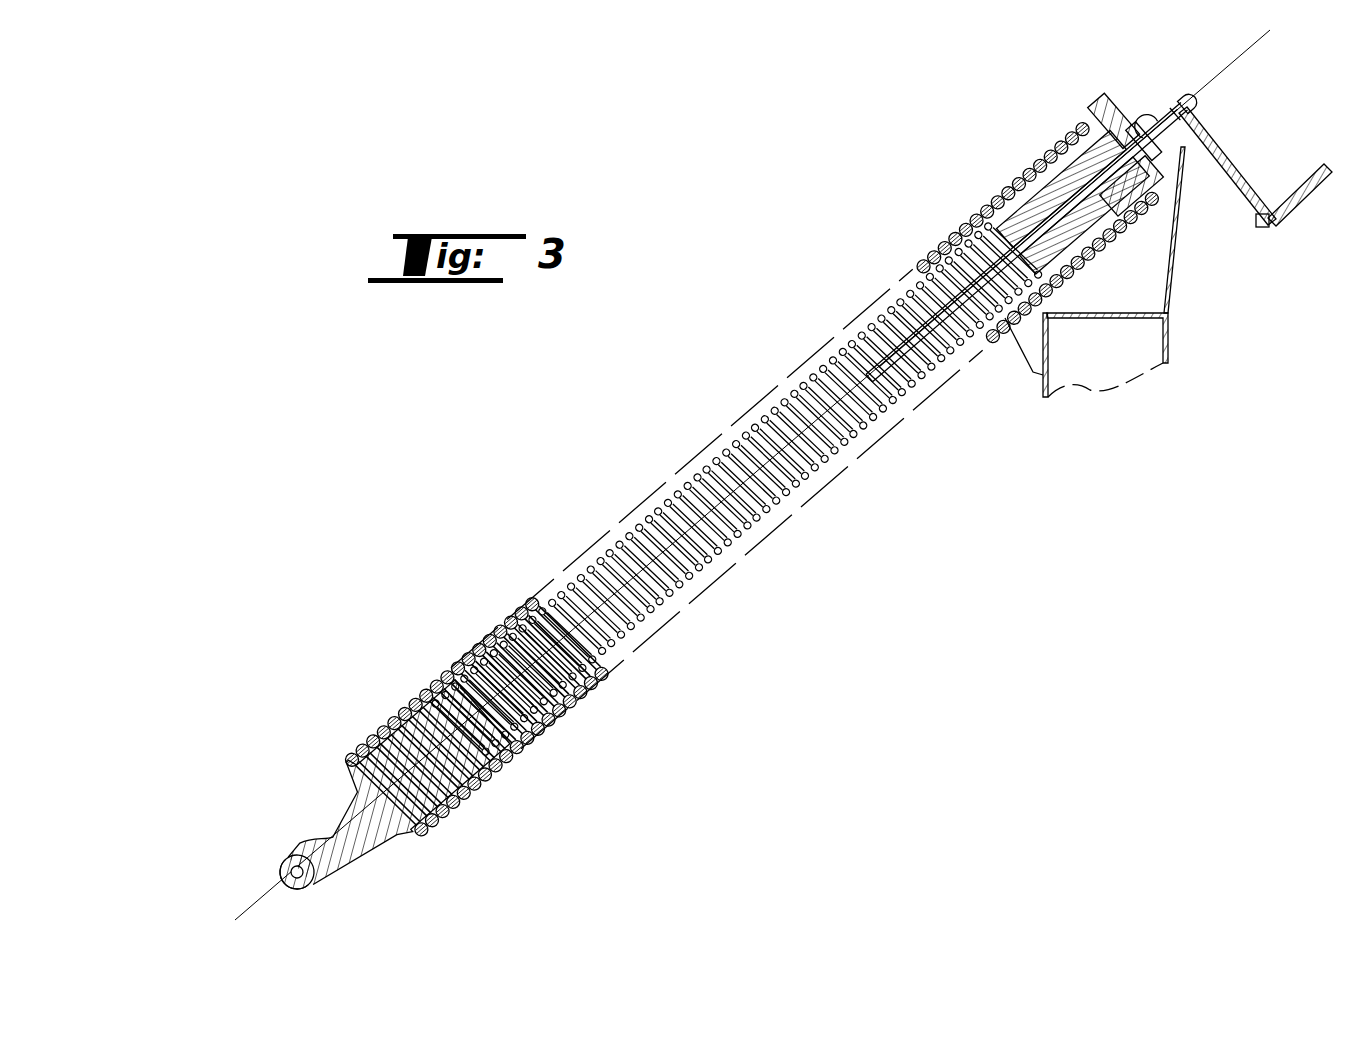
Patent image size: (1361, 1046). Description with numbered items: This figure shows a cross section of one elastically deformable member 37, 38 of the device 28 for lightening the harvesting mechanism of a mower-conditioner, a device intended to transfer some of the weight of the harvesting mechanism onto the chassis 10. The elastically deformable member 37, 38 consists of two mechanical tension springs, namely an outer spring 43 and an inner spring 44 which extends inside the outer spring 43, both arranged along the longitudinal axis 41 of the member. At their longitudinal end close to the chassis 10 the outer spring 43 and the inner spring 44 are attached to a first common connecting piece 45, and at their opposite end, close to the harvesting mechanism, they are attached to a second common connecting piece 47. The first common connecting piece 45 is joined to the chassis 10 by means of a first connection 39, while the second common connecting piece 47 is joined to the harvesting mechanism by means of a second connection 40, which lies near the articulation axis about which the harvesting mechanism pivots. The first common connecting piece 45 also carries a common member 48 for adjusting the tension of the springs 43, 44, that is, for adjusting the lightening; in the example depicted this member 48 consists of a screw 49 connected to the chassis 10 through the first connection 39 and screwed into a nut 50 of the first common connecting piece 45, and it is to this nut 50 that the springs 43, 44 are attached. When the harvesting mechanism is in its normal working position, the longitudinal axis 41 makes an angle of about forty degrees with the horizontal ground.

The chassis 10 is at (1185, 273).
The device for lightening the harvesting mechanism 28 is at (717, 509).
The elastically deformable member 37 is at (477, 717).
The elastically deformable member 38 is at (477, 717).
The first connection 39 is at (1150, 135).
The second connection 40 is at (297, 872).
The longitudinal axis 41 is at (1185, 105).
The outer spring 43 is at (1037, 232).
The inner spring 44 is at (737, 488).
The first common connecting piece 45 is at (1059, 170).
The second common connecting piece 47 is at (381, 795).
The common member for adjusting the tension of the springs 48 is at (1232, 149).
The screw 49 is at (1026, 241).
The nut 50 is at (1091, 215).